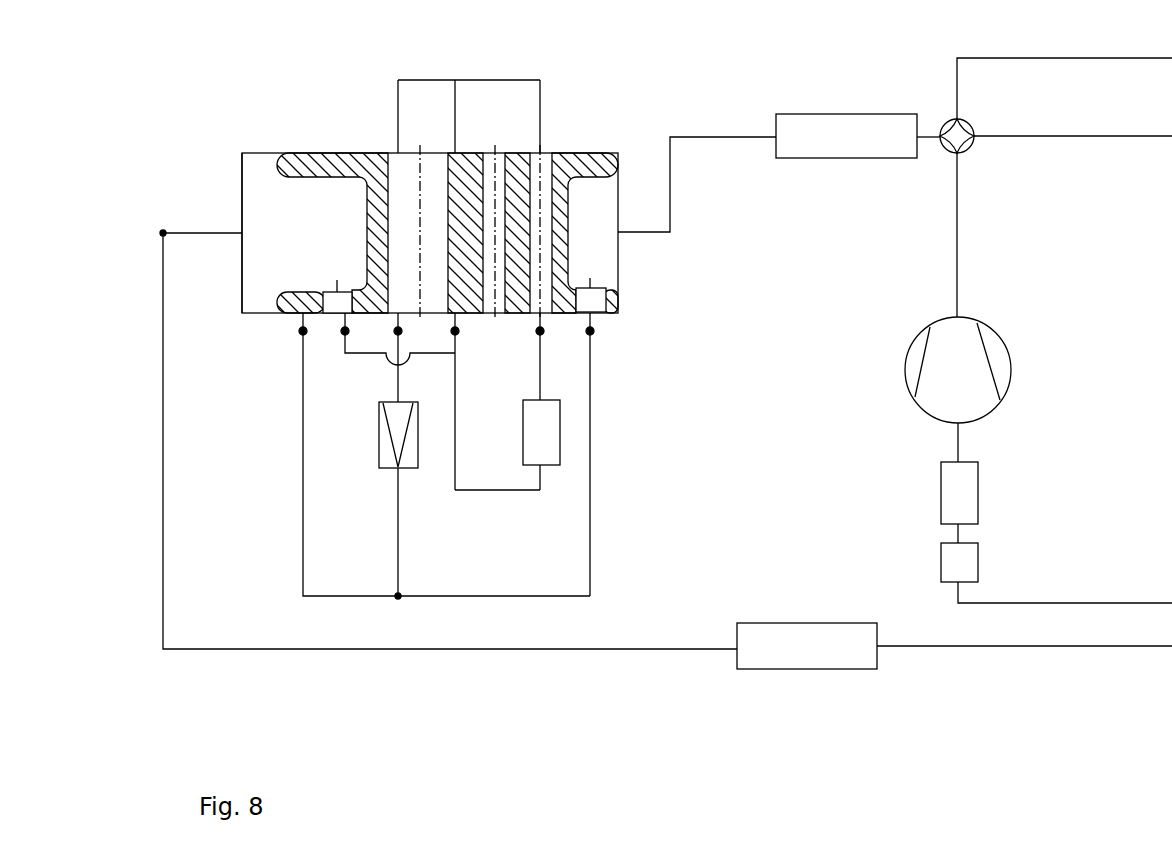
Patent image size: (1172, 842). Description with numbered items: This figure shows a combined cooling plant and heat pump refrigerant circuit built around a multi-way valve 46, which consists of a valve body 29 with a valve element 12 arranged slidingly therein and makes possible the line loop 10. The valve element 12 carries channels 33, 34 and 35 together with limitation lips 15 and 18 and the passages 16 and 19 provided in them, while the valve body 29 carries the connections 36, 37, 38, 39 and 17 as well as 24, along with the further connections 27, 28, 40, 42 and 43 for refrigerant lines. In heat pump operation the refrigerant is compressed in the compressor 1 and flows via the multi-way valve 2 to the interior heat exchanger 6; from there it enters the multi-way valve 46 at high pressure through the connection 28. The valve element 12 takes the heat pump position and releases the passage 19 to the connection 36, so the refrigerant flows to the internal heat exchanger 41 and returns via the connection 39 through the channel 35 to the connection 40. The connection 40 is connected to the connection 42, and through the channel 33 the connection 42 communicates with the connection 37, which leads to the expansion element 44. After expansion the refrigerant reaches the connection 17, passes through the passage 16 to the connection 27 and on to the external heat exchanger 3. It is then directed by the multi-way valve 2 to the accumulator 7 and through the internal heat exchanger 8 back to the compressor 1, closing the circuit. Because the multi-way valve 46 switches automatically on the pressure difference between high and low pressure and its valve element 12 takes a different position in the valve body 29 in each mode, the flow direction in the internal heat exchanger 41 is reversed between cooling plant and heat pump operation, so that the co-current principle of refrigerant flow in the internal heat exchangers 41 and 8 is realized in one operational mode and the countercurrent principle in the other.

The compressor 1 is at (997, 362).
The multi-way valve 2 is at (947, 127).
The external heat exchanger 3 is at (807, 136).
The interior heat exchanger 6 is at (838, 667).
The accumulator 7 is at (960, 558).
The internal heat exchanger 8 is at (960, 490).
The line loop 10 is at (500, 490).
The valve element 12 is at (303, 158).
The limitation lip 15 is at (612, 301).
The passage 16 is at (590, 295).
The connection 17 is at (590, 330).
The limitation lip 18 is at (288, 302).
The passage 19 is at (303, 331).
The connection 24 is at (342, 302).
The connection 27 is at (643, 232).
The connection 28 is at (217, 233).
The valve body 29 is at (242, 193).
The channel 33 is at (413, 183).
The channel 34 is at (495, 183).
The channel 35 is at (540, 187).
The connection 36 is at (345, 331).
The connection 37 is at (398, 331).
The connection 38 is at (455, 331).
The connection 39 is at (540, 331).
The connection 40 is at (540, 125).
The internal heat exchanger 41 is at (557, 432).
The connection 42 is at (398, 125).
The port 43 is at (455, 125).
The expansion element 44 is at (382, 436).
The multi-way valve 46 is at (253, 151).